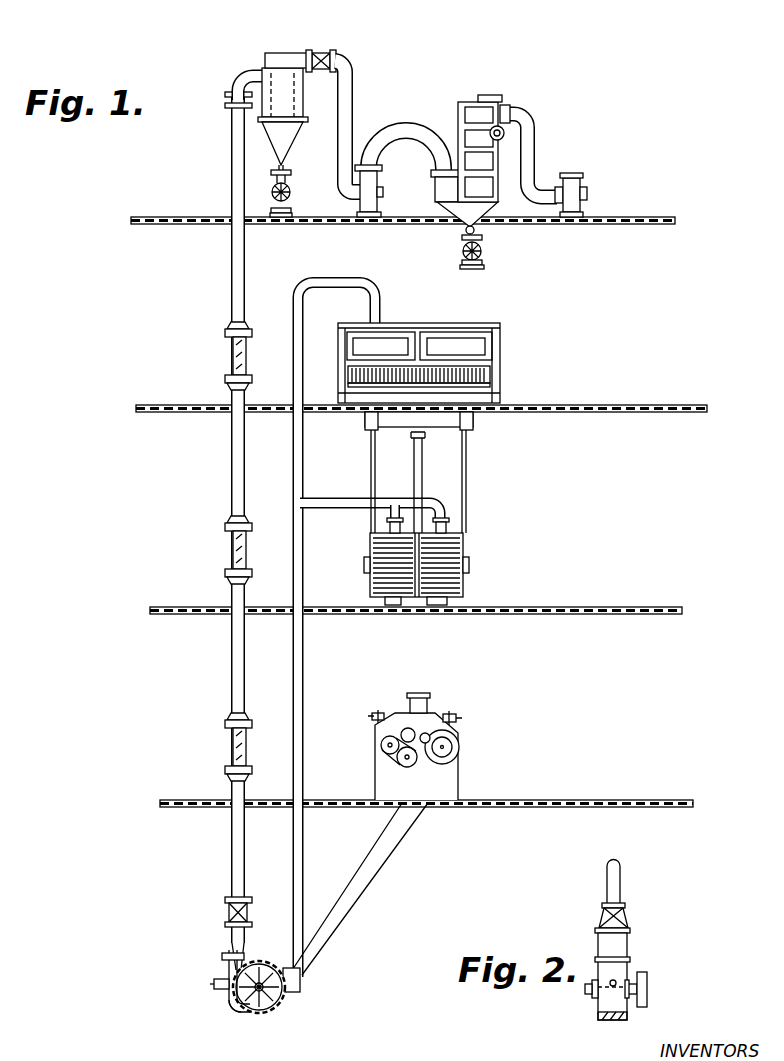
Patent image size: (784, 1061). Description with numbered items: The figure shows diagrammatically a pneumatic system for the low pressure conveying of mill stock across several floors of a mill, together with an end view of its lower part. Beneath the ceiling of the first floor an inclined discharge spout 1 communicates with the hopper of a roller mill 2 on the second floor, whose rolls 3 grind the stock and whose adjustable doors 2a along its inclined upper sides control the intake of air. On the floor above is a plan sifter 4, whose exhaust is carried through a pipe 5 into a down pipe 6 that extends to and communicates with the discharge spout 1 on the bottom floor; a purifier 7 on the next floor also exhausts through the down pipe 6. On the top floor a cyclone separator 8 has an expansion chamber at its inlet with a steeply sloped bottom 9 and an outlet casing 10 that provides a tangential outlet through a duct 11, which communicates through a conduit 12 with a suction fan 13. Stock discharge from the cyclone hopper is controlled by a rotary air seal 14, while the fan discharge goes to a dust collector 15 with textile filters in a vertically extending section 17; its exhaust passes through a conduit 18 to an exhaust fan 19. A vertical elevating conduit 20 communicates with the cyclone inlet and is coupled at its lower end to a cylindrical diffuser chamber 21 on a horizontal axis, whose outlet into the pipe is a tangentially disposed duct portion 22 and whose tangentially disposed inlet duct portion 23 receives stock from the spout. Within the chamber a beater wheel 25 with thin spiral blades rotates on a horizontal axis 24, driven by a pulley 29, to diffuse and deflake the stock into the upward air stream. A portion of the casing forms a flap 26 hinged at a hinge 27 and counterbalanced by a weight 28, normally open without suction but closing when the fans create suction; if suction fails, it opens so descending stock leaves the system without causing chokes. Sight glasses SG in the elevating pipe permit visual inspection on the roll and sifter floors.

In FIG. 1, the discharge spout 1 is at (371, 877).
In FIG. 1, the roller mill 2 is at (449, 775).
In FIG. 1, the adjustable doors 2a is at (393, 697).
In FIG. 1, the rolls 3 is at (453, 722).
In FIG. 1, the plan sifter 4 is at (445, 552).
In FIG. 1, the pipe 5 is at (342, 505).
In FIG. 1, the down pipe 6 is at (293, 339).
In FIG. 1, the purifier 7 is at (384, 342).
In FIG. 1, the cyclone separator 8 is at (268, 76).
In FIG. 1, the steeply sloped bottom 9 is at (250, 78).
In FIG. 1, the outlet casing 10 is at (287, 53).
In FIG. 1, the duct 11 is at (327, 55).
In FIG. 1, the conduit 12 is at (353, 108).
In FIG. 1, the suction fan 13 is at (378, 172).
In FIG. 1, the rotary air seal 14 is at (291, 196).
In FIG. 1, the dust collector 15 is at (445, 205).
In FIG. 1, the vertically extending section 17 is at (486, 167).
In FIG. 1, the conduit 18 is at (538, 163).
In FIG. 1, the exhaust fan 19 is at (583, 181).
In FIG. 1, the elevating conduit 20 is at (231, 165).
In FIG. 2, the elevating conduit 20 is at (620, 884).
In FIG. 1, the diffuser chamber 21 is at (260, 1013).
In FIG. 1, the tangentially disposed duct portion 22 is at (228, 966).
In FIG. 1, the tangentially disposed inlet duct portion 23 is at (300, 988).
In FIG. 1, the horizontal axis 24 is at (268, 963).
In FIG. 1, the beater wheel 25 is at (265, 978).
In FIG. 1, the flap 26 is at (237, 1008).
In FIG. 2, the flap 26 is at (606, 1001).
In FIG. 1, the hinge 27 is at (228, 992).
In FIG. 1, the weight 28 is at (214, 984).
In FIG. 2, the weight 28 is at (616, 984).
In FIG. 2, the pulley 29 is at (647, 995).
In FIG. 1, the sight glasses SG is at (233, 361).